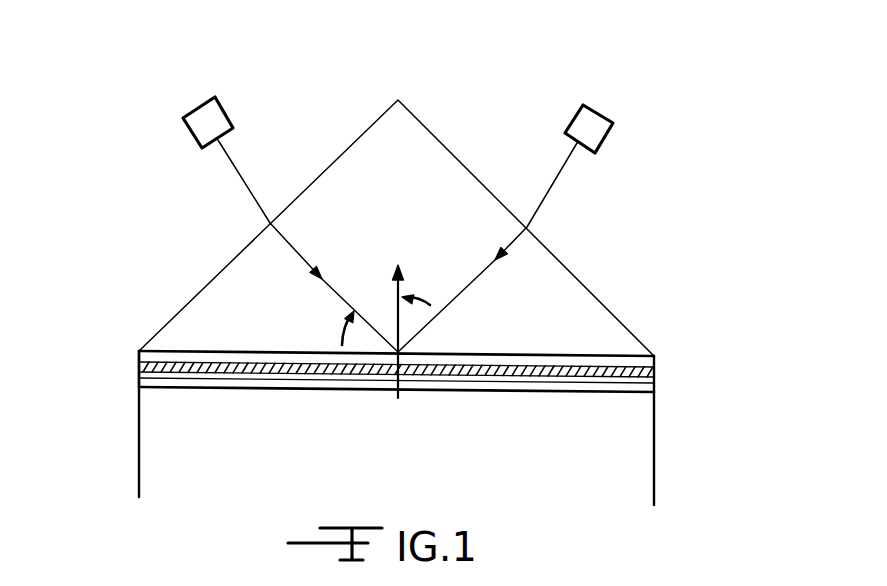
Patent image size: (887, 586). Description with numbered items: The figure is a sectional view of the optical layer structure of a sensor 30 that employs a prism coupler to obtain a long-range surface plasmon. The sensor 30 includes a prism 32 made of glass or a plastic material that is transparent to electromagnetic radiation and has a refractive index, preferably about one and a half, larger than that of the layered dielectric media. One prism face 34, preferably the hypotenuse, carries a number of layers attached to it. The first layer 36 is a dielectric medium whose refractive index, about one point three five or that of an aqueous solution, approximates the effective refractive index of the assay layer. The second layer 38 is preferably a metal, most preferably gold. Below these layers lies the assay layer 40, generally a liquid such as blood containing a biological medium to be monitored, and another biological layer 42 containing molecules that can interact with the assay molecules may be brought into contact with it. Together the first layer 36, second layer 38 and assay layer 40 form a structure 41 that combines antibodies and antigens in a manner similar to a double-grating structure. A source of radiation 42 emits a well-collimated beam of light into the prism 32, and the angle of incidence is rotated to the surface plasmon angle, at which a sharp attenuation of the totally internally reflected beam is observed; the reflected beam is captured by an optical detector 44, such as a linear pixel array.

The sensor 30 is at (688, 253).
The prism 32 is at (437, 137).
The prism face 34 is at (171, 338).
The first layer 36 is at (658, 360).
The second layer 38 is at (657, 373).
The assay layer 40 is at (607, 382).
The structure 41 is at (122, 378).
The source of radiation 42 is at (190, 135).
The optical detector 44 is at (600, 115).